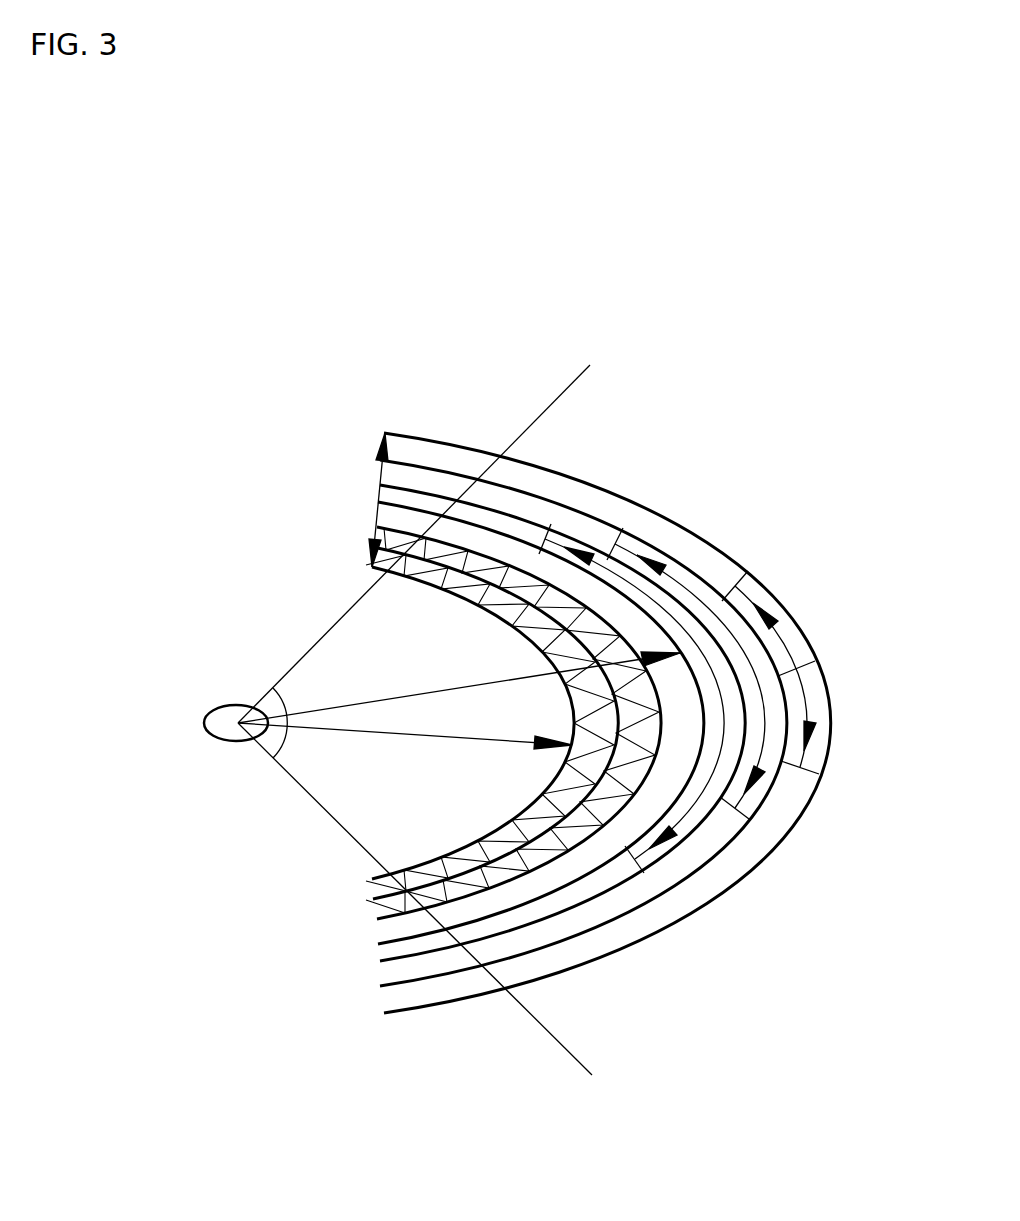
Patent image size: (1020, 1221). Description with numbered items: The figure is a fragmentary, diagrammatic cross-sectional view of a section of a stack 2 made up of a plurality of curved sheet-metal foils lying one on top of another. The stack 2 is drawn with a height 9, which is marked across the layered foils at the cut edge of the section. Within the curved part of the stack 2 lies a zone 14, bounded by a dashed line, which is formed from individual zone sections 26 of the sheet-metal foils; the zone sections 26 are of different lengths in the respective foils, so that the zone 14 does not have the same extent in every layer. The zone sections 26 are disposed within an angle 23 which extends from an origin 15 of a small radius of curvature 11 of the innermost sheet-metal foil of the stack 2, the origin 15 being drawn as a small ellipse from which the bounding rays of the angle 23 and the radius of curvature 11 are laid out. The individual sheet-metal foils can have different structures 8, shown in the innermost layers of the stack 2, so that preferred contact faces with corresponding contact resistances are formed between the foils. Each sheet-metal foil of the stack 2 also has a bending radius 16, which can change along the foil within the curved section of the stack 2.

The stack 2 is at (610, 533).
The structures 8 is at (375, 900).
The height 9 is at (383, 490).
The small radius of curvature 11 is at (330, 740).
The zone 14 is at (600, 857).
The origin 15 is at (218, 715).
The bending radius 16 is at (347, 700).
The angle 23 is at (273, 748).
The zone sections 26 is at (697, 590).